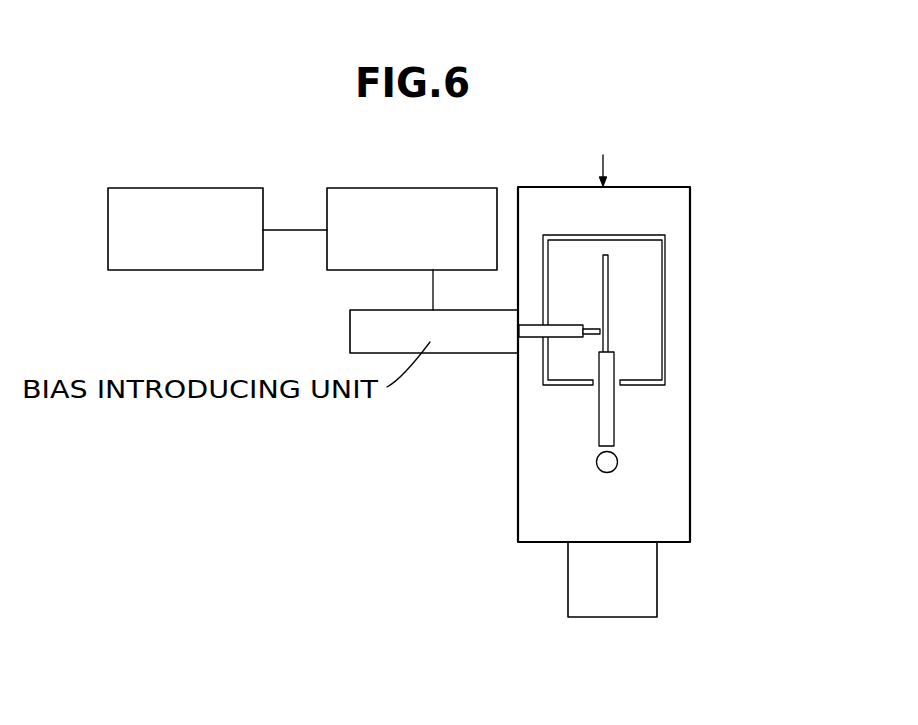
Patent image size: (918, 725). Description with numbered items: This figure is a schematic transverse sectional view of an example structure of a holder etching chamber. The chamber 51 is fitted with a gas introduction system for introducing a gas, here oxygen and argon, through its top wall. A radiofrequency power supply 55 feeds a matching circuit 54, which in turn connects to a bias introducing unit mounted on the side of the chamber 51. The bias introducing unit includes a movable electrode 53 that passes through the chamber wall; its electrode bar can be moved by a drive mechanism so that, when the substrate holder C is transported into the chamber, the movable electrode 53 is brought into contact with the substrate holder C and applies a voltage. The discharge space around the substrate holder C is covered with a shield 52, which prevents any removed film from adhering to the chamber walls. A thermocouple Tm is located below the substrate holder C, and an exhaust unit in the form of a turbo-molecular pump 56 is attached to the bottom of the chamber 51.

The vacuum chamber 51 is at (675, 187).
The shield 52 is at (663, 285).
The movable electrode 53 is at (540, 340).
The matching circuit 54 is at (452, 188).
The radiofrequency power supply 55 is at (242, 188).
The exhaust unit (turbo-molecular pump) 56 is at (568, 585).
The substrate holder C is at (614, 368).
The thermocouple Tm is at (597, 460).